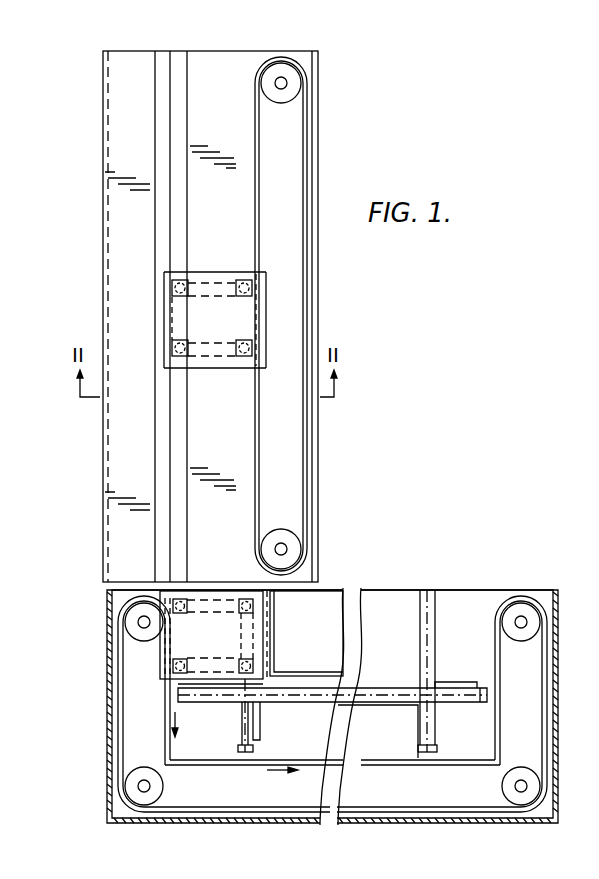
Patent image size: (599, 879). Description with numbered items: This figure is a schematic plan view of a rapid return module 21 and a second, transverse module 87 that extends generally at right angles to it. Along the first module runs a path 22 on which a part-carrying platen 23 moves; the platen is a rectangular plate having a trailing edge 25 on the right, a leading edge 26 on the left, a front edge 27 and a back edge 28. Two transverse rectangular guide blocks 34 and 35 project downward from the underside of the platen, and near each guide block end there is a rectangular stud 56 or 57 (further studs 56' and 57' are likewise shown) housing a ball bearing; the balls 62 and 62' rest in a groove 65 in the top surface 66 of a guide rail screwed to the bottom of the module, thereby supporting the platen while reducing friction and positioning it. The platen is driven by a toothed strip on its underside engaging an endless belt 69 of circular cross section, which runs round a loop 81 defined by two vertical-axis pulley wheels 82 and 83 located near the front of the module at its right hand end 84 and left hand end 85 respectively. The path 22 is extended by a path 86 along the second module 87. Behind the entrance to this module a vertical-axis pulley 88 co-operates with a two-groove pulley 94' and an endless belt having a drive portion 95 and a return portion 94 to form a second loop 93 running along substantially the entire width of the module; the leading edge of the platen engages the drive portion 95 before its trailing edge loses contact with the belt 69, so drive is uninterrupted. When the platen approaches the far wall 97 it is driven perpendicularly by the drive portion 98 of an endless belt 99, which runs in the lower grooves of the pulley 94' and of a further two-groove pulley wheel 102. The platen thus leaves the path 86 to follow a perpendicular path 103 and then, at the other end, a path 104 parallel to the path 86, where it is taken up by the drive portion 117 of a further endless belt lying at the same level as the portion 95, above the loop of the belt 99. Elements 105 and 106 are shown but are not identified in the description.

The rapid return module 21 is at (207, 44).
The path 22 is at (226, 133).
The part-carrying platen 23 is at (212, 256).
The trailing edge 25 is at (196, 272).
The leading edge 26 is at (198, 368).
The front edge 27 is at (266, 323).
The back edge 28 is at (164, 297).
The guide block 34 is at (228, 286).
The guide block 35 is at (215, 353).
The stud 57 is at (152, 615).
The coupling member 57' is at (220, 709).
The stud 56 is at (239, 629).
The guide roller of second carriage 56' is at (241, 656).
The ball bearing 62 is at (157, 268).
The ball 62' is at (154, 359).
The groove 65 is at (173, 108).
The top surface 66 is at (162, 437).
The endless belt 69 is at (263, 487).
The loop 81 is at (271, 423).
The pulley wheel 82 is at (292, 77).
The pulley wheel 83 is at (295, 545).
The right hand end 84 is at (117, 50).
The left hand end 85 is at (103, 583).
The path 86 is at (210, 627).
The second module 87 is at (82, 736).
The pulley 88 is at (130, 612).
The second loop 93 is at (128, 688).
The return portion 94 is at (98, 702).
The pulley 94' is at (140, 812).
The drive portion 95 is at (166, 723).
The far wall 97 is at (213, 825).
The drive portion 98 is at (215, 767).
The endless belt 99 is at (417, 798).
The pulley wheel 102 is at (517, 800).
The path 103 is at (383, 736).
The path 104 is at (473, 640).
The guide rail 105 is at (362, 676).
The bracket 106 is at (292, 705).
The drive portion 117 is at (502, 695).